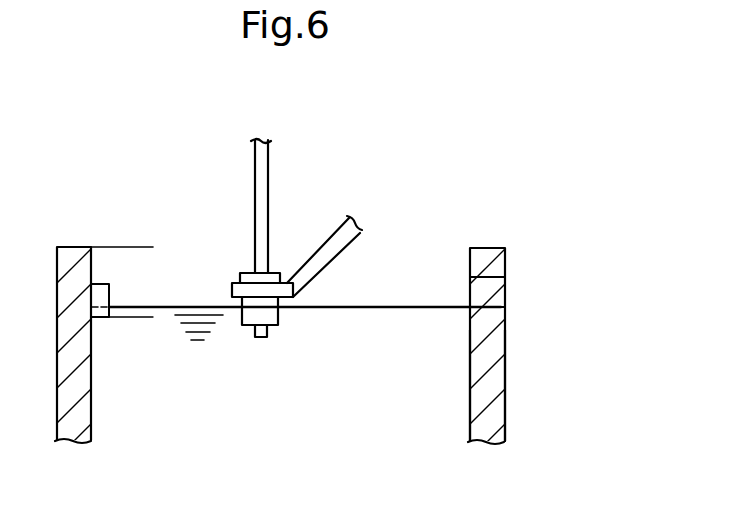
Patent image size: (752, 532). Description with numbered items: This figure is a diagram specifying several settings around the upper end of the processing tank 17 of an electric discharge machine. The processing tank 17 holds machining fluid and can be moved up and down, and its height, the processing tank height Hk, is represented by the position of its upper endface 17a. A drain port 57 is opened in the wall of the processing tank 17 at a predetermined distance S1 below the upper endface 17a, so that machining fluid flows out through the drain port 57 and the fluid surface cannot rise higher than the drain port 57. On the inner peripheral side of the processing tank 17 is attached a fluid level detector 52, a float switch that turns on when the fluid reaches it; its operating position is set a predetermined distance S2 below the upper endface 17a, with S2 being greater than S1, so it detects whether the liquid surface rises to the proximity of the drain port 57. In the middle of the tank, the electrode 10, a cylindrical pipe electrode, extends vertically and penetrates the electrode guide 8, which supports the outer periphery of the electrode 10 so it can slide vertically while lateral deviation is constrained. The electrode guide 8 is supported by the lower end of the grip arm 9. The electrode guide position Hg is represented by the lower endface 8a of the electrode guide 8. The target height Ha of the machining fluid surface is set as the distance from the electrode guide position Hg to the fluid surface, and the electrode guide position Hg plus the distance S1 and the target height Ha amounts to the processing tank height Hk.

The upper endface of processing tank 17a is at (73, 247).
The processing tank 17 is at (507, 393).
The drain port 57 is at (487, 305).
The fluid level detector 52 is at (98, 318).
The electrode 10 is at (263, 184).
The grip arm 9 is at (338, 243).
The electrode guide 8 is at (240, 281).
The lower endface of electrode guide 8a is at (243, 327).
The predetermined distance S1 is at (423, 248).
The predetermined distance S2 is at (143, 247).
The processing tank height Hk is at (412, 248).
The electrode guide position Hg is at (278, 324).
The target height Ha is at (357, 282).